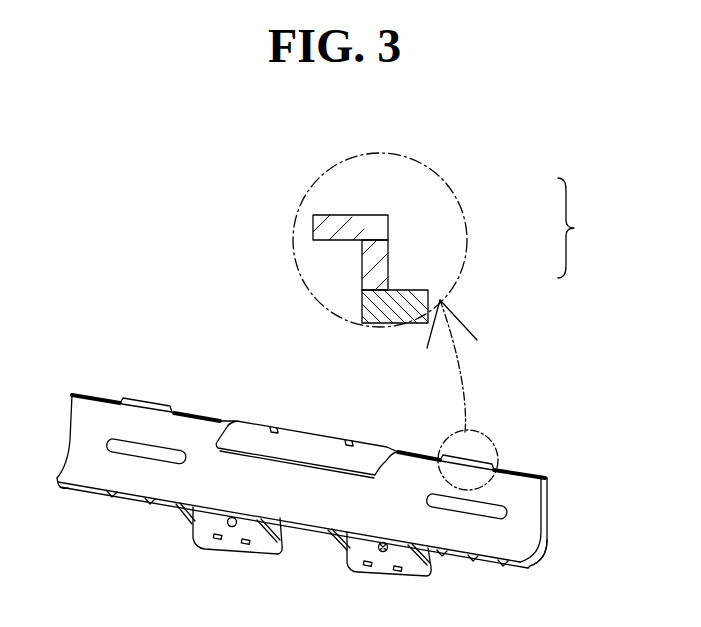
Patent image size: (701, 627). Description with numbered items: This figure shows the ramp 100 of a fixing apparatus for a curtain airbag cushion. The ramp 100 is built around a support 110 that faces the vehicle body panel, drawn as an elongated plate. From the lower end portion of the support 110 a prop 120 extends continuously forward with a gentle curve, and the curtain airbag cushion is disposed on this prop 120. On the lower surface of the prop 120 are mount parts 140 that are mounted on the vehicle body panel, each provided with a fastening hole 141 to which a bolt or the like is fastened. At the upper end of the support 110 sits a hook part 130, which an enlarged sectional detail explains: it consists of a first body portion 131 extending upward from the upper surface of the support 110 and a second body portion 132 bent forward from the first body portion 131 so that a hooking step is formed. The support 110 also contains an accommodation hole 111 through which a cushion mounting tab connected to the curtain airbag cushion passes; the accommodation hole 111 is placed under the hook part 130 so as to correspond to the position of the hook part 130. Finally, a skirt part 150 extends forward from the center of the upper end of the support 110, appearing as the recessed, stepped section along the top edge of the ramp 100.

The ramp 100 is at (87, 507).
The support 110 is at (387, 318).
The accommodation hole 111 is at (147, 454).
The prop 120 is at (537, 564).
The hook part 130 is at (473, 448).
The first body portion 131 is at (389, 254).
The second body portion 132 is at (366, 214).
The mount part 140 is at (350, 557).
The fastening hole 141 is at (383, 553).
The skirt part 150 is at (295, 447).